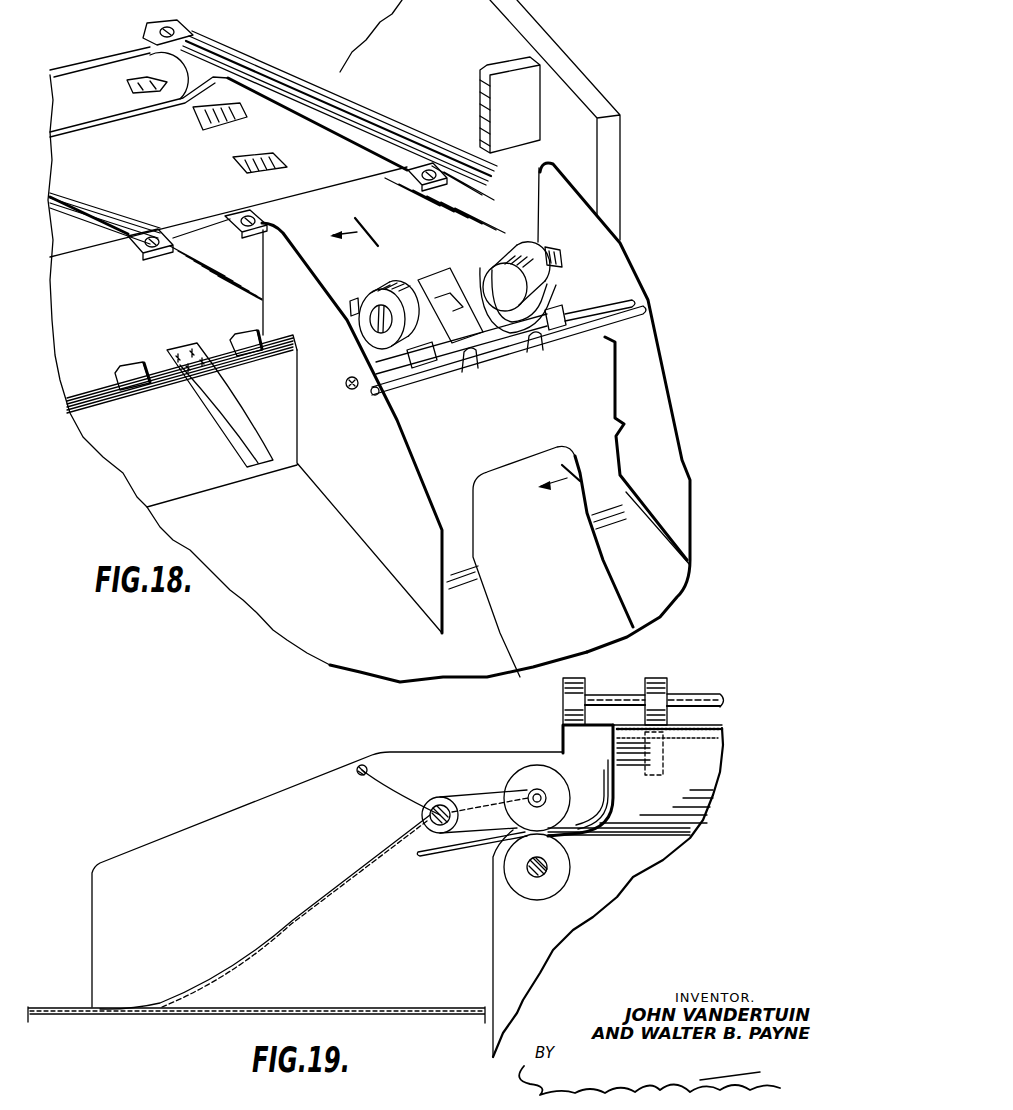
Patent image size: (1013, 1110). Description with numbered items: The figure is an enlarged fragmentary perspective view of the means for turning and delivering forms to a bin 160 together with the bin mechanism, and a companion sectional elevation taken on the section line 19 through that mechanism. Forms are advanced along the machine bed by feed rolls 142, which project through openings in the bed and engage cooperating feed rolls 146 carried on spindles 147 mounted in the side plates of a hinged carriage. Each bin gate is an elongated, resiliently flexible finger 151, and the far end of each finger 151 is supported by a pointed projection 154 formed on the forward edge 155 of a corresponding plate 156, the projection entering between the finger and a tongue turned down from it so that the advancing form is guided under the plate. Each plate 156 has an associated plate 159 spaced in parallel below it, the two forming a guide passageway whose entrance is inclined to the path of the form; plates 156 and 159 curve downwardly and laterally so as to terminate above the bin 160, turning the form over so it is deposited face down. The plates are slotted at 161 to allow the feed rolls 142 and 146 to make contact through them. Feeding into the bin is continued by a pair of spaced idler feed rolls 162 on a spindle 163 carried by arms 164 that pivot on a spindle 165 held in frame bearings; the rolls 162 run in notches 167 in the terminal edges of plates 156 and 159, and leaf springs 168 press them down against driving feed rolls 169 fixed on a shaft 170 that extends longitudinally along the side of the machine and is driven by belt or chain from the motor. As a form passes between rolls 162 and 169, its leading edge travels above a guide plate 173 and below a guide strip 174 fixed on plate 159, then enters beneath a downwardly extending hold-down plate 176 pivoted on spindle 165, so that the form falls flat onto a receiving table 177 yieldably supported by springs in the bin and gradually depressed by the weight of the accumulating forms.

In FIG. 18, the section line 19 is at (438, 360).
In FIG. 18, the feed roll 142 is at (210, 114).
In FIG. 19, the cooperating feed roll 146 is at (645, 682).
In FIG. 19, the spindle 147 is at (697, 698).
In FIG. 18, the flexible strip or finger 151 is at (133, 107).
In FIG. 18, the pointed projection 154 is at (152, 84).
In FIG. 18, the forward edge 155 is at (302, 118).
In FIG. 18, the plate 156 is at (353, 118).
In FIG. 19, the plate 156 is at (583, 833).
In FIG. 18, the plate 159 is at (368, 170).
In FIG. 19, the plate 159 is at (590, 833).
In FIG. 18, the bin 160 is at (297, 585).
In FIG. 18, the slot 161 is at (240, 165).
In FIG. 18, the idler feed roll 162 is at (391, 284).
In FIG. 18, the spindle 163 is at (482, 283).
In FIG. 18, the arm 164 is at (230, 410).
In FIG. 18, the spindle 165 is at (633, 309).
In FIG. 18, the notch 167 is at (133, 361).
In FIG. 18, the leaf spring 168 is at (536, 345).
In FIG. 19, the driving feed roll 169 is at (560, 879).
In FIG. 19, the shaft 170 is at (540, 877).
In FIG. 19, the guide plate 173 is at (493, 868).
In FIG. 19, the guide strip 174 is at (424, 852).
In FIG. 18, the hold-down plate 176 is at (470, 553).
In FIG. 19, the hold-down plate 176 is at (297, 919).
In FIG. 18, the receiving table 177 is at (670, 580).
In FIG. 19, the receiving table 177 is at (399, 1007).